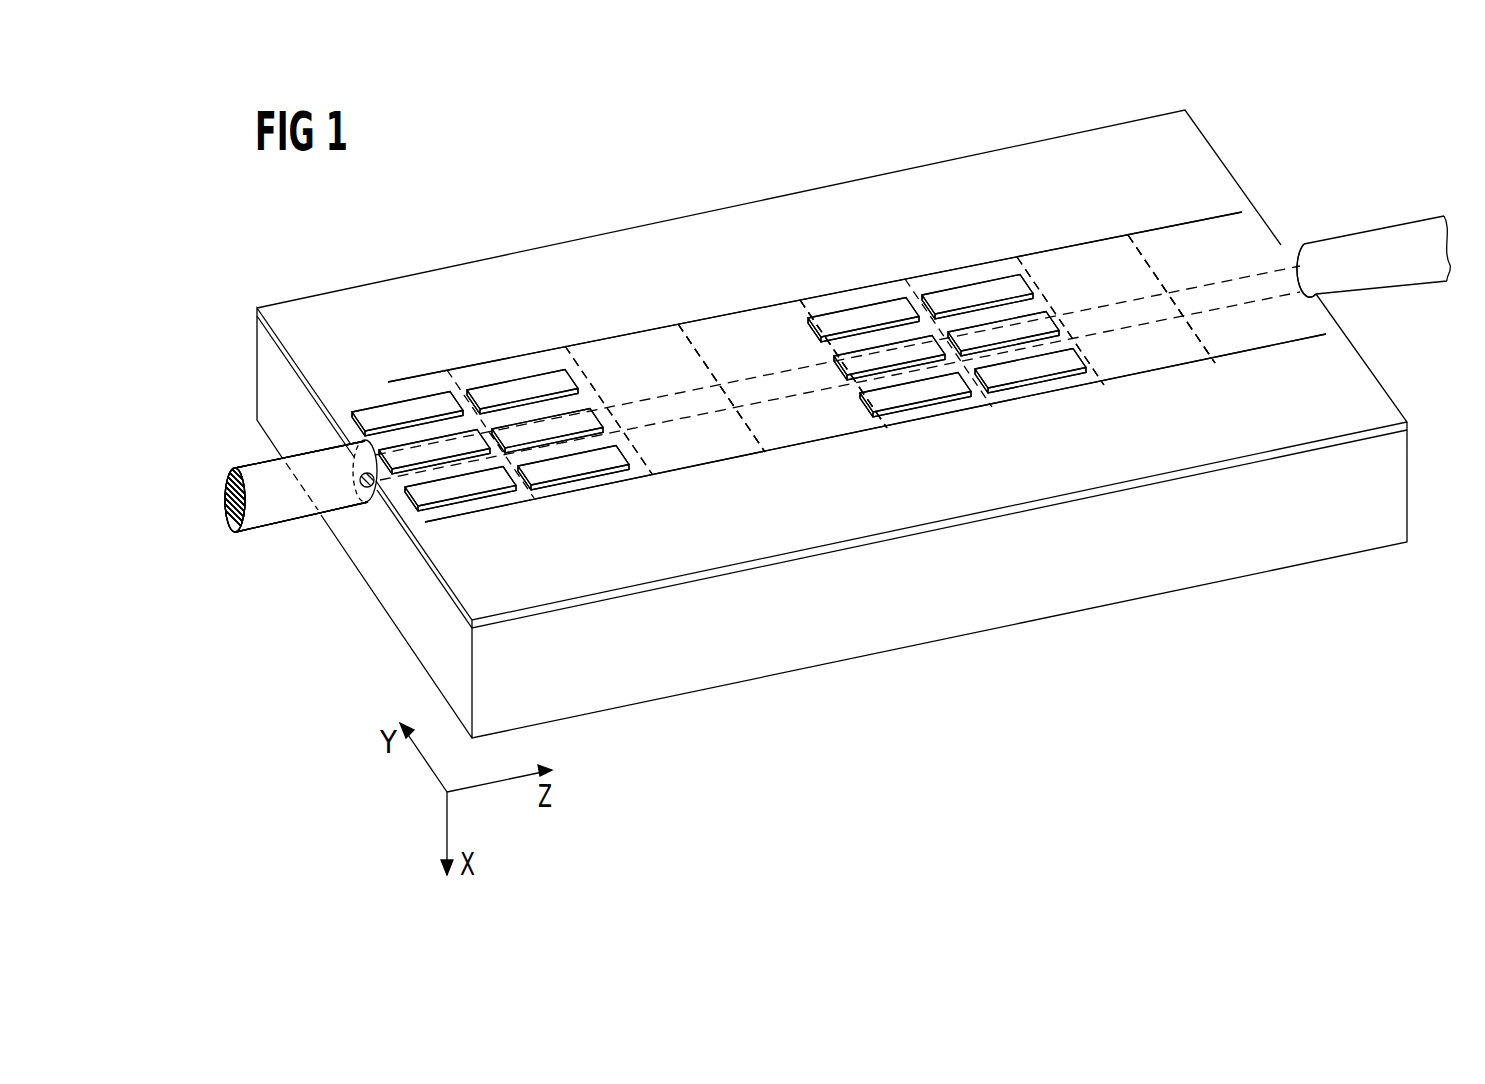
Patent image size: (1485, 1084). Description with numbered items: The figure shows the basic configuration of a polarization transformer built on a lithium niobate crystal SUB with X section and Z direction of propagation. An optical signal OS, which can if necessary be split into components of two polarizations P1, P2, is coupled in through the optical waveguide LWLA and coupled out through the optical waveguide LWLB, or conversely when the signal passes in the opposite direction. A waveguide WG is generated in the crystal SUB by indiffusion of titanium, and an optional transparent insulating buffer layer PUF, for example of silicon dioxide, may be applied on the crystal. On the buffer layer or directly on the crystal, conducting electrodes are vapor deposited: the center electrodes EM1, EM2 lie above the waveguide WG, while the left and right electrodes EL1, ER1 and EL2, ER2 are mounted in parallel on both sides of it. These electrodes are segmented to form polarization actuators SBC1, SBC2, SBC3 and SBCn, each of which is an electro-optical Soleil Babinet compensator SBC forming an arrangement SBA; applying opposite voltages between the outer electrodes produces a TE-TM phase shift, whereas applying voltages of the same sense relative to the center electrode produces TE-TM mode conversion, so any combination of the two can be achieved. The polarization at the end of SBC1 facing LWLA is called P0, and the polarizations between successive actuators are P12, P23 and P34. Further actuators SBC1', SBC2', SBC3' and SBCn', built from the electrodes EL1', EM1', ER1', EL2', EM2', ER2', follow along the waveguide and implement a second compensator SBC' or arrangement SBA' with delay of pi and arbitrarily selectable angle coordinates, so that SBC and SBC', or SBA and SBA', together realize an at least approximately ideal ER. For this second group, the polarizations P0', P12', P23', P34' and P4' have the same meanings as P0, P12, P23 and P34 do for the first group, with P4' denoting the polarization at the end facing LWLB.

The crystal SUB is at (817, 651).
The insulating buffer layer PUF is at (257, 318).
The optical waveguide LWLA is at (267, 521).
The optical signal OS is at (277, 551).
The polarization component P1 is at (271, 568).
The polarization component P2 is at (271, 568).
The polarization at the LWLA-facing end of SBC1 P0 is at (330, 451).
The waveguide WG is at (362, 505).
The electro-optical Soleil Babinet compensator SBC is at (815, 382).
The Soleil Babinet arrangement SBA is at (875, 443).
The left electrode EL1 is at (395, 388).
The center electrode EM1 is at (410, 553).
The right electrode ER1 is at (460, 518).
The left electrode EL2 is at (522, 310).
The center electrode EM2 is at (547, 485).
The right electrode ER2 is at (573, 495).
The polarization actuator SBC1 is at (433, 405).
The polarization actuator SBC2 is at (534, 385).
The polarization actuator SBC3 is at (665, 367).
The polarization actuator SBCn is at (782, 342).
The polarization between SBC1 and SBC2 P12 is at (476, 405).
The polarization between SBC2 and SBC3 P23 is at (593, 382).
The polarization between SBC3 and SBC4 P34 is at (706, 358).
The polarization at the input end of SBC1' P0' is at (828, 290).
The polarization at the output end of SBCn' P4' is at (1031, 290).
The left electrode EL1' is at (863, 320).
The center electrode EM1' is at (889, 358).
The right electrode ER1' is at (915, 395).
The left electrode EL2' is at (977, 297).
The center electrode EM2' is at (1003, 334).
The right electrode ER2' is at (1030, 371).
The polarization actuator SBC1' is at (888, 321).
The polarization actuator SBC2' is at (999, 296).
The polarization actuator SBC3' is at (1116, 281).
The polarization actuator SBCn' is at (1171, 259).
The polarization between SBC1' and SBC2' P12' is at (948, 370).
The polarization between SBC2' and SBC3' P23' is at (1060, 348).
The polarization between SBC3' and SBC4' P34' is at (1172, 324).
The second electro-optical Soleil Babinet compensator SBC' is at (815, 341).
The second Soleil Babinet arrangement SBA' is at (875, 428).
The optical waveguide LWLB is at (1410, 236).